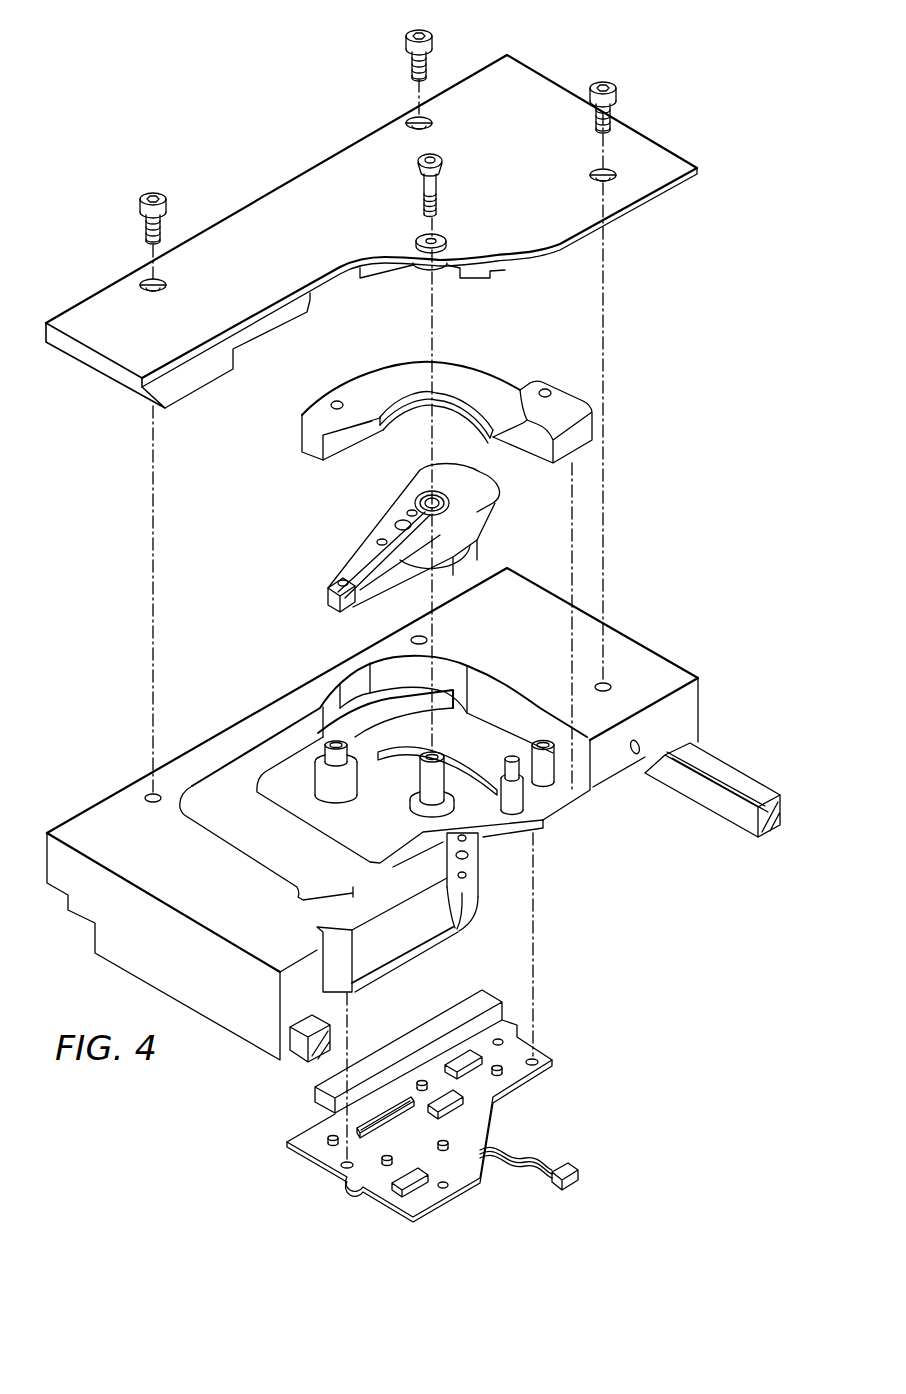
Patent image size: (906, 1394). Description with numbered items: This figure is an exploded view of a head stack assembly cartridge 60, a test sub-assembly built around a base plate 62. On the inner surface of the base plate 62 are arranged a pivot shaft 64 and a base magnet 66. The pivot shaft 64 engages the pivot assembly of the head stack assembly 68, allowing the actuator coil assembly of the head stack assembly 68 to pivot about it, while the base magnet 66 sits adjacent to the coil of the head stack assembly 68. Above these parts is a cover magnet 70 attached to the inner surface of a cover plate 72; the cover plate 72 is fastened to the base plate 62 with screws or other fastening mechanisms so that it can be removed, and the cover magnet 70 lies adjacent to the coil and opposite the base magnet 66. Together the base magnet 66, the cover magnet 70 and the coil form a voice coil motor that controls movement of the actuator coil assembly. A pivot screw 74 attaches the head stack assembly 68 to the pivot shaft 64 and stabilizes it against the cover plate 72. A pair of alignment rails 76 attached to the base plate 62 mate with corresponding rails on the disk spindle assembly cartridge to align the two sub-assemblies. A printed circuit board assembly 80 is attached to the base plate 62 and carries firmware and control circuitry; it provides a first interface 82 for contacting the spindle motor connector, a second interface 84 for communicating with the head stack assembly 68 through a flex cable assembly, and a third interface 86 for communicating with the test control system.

The head stack assembly cartridge 60 is at (163, 98).
The base plate 62 is at (635, 650).
The pivot shaft 64 is at (403, 798).
The base magnet 66 is at (470, 752).
The head stack assembly 68 is at (390, 513).
The cover magnet 70 is at (480, 387).
The cover plate 72 is at (645, 155).
The pivot screw 74 is at (443, 161).
The alignment rails 76 is at (730, 777).
The printed circuit board assembly 80 is at (564, 1040).
The first interface 82 is at (578, 1171).
The second interface 84 is at (397, 1100).
The third interface 86 is at (445, 1017).